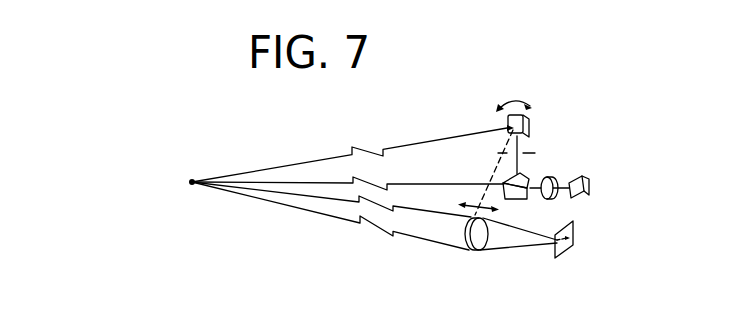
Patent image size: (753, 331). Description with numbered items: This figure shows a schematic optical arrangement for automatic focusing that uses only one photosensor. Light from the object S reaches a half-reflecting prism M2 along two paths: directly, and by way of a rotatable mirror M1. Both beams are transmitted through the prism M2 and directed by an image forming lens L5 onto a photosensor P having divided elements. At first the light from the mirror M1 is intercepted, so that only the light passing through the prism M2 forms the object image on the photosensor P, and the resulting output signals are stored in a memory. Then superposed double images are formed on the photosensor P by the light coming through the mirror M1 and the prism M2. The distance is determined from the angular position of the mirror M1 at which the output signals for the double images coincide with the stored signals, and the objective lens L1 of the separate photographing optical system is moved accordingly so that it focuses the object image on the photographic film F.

The object S is at (186, 172).
The rotatable mirror M1 is at (530, 124).
The half-reflecting prism M2 is at (524, 173).
The photosensor P is at (584, 172).
The image forming lens L5 is at (555, 196).
The objective lens L1 is at (473, 253).
The photographic film F is at (573, 249).